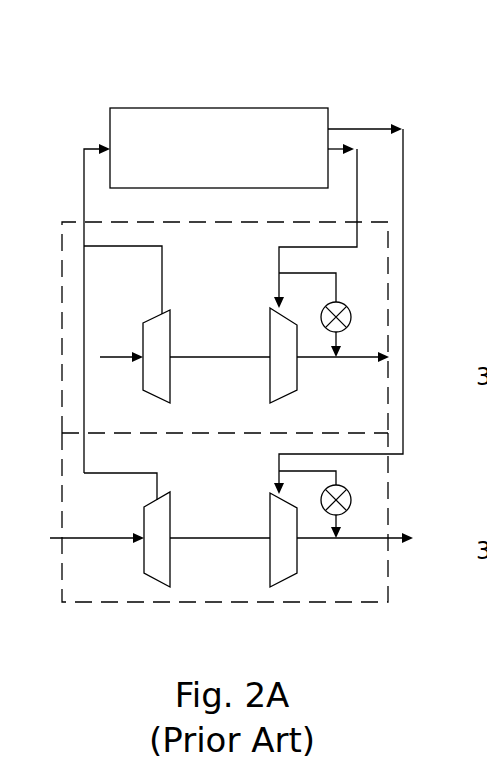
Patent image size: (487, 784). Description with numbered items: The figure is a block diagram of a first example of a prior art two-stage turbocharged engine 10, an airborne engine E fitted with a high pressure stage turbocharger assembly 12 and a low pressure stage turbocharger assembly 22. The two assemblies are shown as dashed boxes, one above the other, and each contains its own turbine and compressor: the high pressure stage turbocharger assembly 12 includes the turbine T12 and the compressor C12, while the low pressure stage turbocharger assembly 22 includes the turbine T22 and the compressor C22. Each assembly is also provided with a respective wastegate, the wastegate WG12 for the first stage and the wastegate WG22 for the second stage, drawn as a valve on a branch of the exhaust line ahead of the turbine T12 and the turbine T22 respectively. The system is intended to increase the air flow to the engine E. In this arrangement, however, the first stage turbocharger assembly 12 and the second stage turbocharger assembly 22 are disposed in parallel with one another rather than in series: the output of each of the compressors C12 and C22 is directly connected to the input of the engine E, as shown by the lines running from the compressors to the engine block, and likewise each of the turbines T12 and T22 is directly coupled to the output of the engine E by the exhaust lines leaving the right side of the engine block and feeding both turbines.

The two-stage turbocharged engine 10 is at (376, 96).
The high pressure stage turbocharger assembly 12 is at (62, 292).
The low pressure stage turbocharger assembly 22 is at (62, 470).
The compressor C12 is at (172, 325).
The turbine T12 is at (263, 373).
The wastegate WG12 is at (352, 317).
The compressor C22 is at (172, 507).
The turbine T22 is at (267, 552).
The wastegate WG22 is at (352, 500).